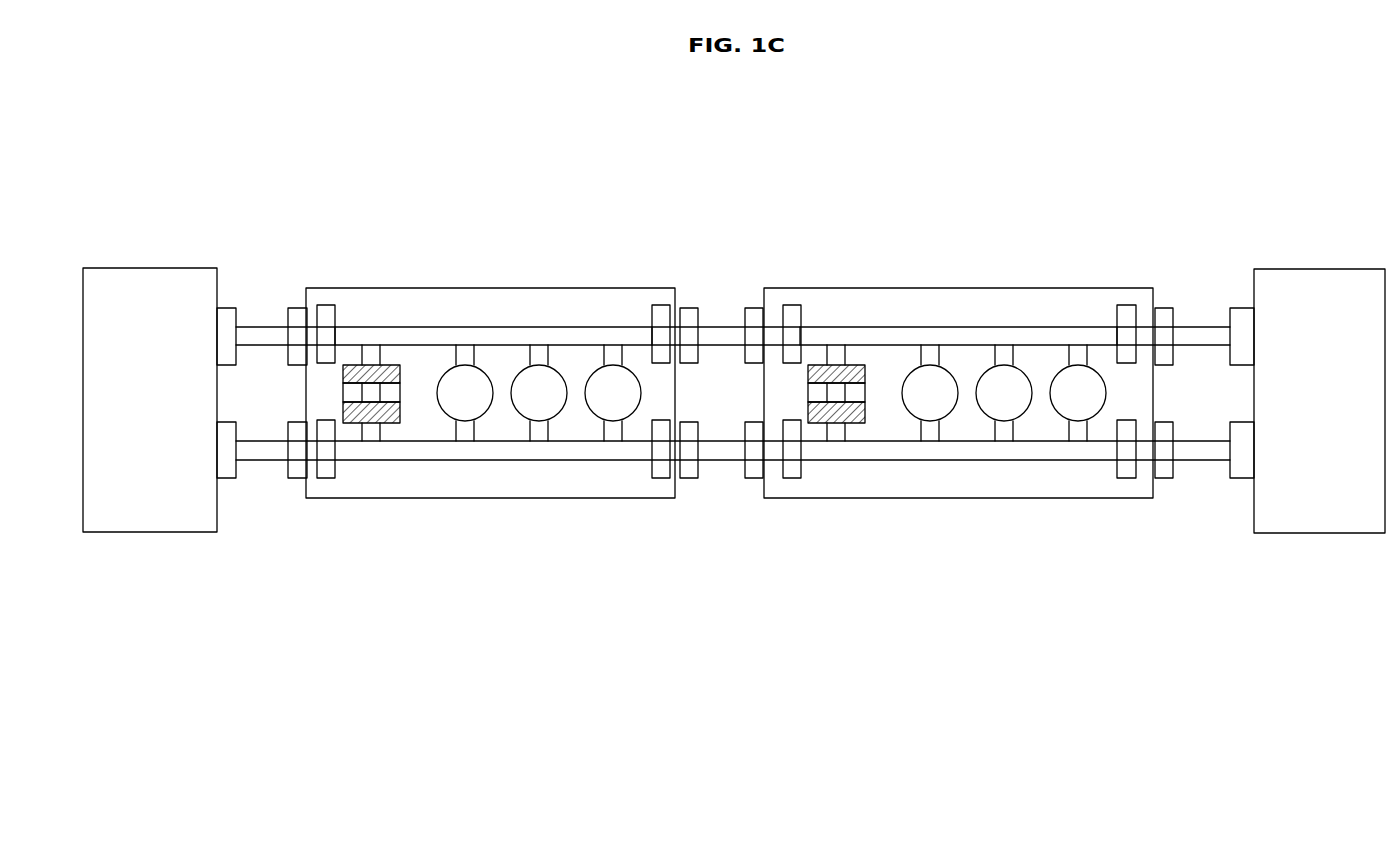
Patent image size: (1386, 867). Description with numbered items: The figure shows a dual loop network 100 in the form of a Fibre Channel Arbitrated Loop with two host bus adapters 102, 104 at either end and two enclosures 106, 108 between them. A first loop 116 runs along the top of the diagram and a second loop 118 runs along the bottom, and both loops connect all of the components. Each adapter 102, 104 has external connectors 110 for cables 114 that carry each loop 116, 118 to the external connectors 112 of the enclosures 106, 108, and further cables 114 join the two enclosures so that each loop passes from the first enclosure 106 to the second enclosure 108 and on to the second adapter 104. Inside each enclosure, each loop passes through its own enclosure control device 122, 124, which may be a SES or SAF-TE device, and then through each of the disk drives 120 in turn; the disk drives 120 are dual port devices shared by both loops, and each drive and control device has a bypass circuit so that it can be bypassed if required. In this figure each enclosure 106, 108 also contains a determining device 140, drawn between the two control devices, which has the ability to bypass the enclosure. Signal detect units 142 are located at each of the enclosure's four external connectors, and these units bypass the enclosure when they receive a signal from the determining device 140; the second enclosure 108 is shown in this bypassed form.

The loop network 100 is at (470, 166).
The first host bus adapter 102 is at (170, 268).
The second host bus adapter 104 is at (1362, 269).
The first enclosure 106 is at (650, 288).
The second enclosure 108 is at (912, 288).
The adapter external connector 110 is at (207, 362).
The enclosure external connector 112 is at (785, 306).
The cable 114 is at (263, 441).
The first loop 116 is at (390, 327).
The second loop 118 is at (500, 460).
The disk drive 120 is at (464, 365).
The enclosure control device 122 is at (378, 365).
The enclosure control device 124 is at (373, 423).
The determining device 140 is at (395, 383).
The signal detect unit 142 is at (337, 327).